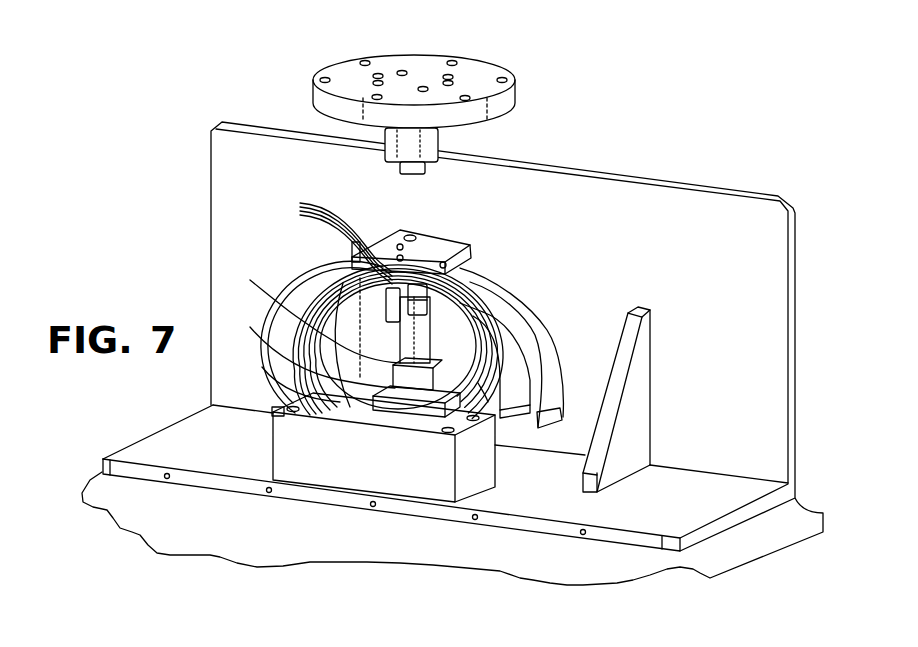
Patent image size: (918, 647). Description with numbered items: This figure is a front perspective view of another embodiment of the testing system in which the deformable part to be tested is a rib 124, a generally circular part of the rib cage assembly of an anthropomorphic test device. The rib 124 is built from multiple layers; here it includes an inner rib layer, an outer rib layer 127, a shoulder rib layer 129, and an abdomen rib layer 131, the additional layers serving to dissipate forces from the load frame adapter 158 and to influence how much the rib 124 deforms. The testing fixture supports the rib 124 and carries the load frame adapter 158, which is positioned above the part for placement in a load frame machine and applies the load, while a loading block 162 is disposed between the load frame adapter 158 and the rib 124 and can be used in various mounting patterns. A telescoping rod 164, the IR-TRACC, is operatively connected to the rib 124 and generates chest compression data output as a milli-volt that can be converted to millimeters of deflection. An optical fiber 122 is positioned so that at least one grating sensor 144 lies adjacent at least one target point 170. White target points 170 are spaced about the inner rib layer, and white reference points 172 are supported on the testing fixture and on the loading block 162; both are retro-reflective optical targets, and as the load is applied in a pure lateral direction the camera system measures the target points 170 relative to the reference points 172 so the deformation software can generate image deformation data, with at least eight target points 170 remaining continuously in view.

The optical fiber 122 is at (297, 313).
The rib 124 is at (480, 425).
The outer rib layer 127 is at (480, 385).
The shoulder rib layer 129 is at (513, 375).
The abdomen rib layer 131 is at (497, 296).
The grating sensor 144 is at (452, 418).
The load frame adapter 158 is at (472, 78).
The loading block 162 is at (418, 236).
The telescoping rod 164 is at (427, 373).
The target points 170 is at (308, 286).
The reference points 172 is at (581, 534).